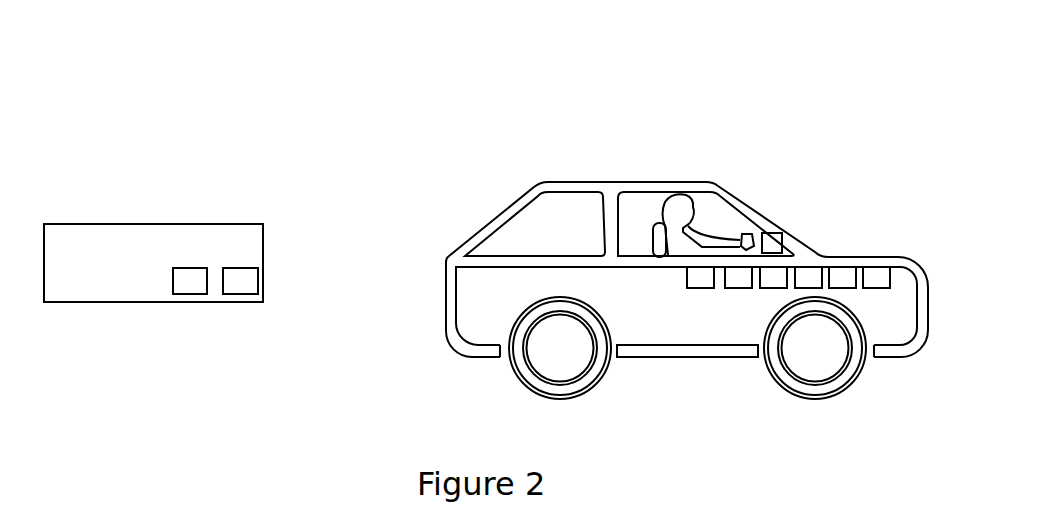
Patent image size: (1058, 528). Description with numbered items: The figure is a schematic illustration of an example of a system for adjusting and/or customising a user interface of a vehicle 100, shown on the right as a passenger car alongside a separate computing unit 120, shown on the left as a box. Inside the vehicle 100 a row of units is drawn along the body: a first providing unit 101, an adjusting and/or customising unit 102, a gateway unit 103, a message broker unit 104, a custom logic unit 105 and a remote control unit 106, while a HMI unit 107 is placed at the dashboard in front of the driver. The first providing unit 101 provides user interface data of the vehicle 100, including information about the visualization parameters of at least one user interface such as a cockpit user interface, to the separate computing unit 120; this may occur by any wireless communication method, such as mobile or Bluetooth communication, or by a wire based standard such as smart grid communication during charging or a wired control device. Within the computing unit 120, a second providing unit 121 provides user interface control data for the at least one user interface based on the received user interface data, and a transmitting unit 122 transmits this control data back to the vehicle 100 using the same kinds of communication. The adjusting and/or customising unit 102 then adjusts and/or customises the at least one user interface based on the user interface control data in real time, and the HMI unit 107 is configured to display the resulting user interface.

The vehicle 100 is at (576, 129).
The first providing unit 101 is at (700, 288).
The adjusting and/or customising unit 102 is at (743, 288).
The gateway unit 103 is at (770, 288).
The message broker unit 104 is at (807, 288).
The custom logic unit 105 is at (837, 288).
The remote control unit 106 is at (872, 288).
The HMI unit 107 is at (770, 233).
The computing unit 120 is at (146, 223).
The second providing unit 121 is at (190, 296).
The transmitting unit 122 is at (240, 296).